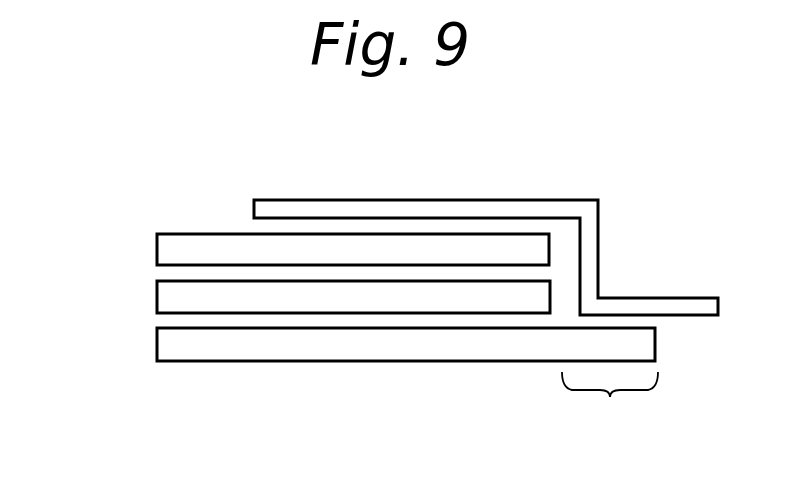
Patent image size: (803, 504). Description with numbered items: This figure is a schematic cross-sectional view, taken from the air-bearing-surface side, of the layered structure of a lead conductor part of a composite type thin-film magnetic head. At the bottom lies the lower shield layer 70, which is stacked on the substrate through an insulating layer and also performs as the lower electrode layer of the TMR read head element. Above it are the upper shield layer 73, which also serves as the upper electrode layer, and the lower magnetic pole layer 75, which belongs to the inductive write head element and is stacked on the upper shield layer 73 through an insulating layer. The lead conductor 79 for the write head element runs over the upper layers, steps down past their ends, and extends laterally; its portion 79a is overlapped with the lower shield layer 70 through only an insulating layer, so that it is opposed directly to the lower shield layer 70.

The lower shield layer 70 is at (172, 335).
The upper shield layer 73 is at (170, 293).
The lower magnetic pole layer 75 is at (178, 252).
The lead conductor 79 is at (382, 208).
The portion of the lead conductor 79a is at (610, 407).